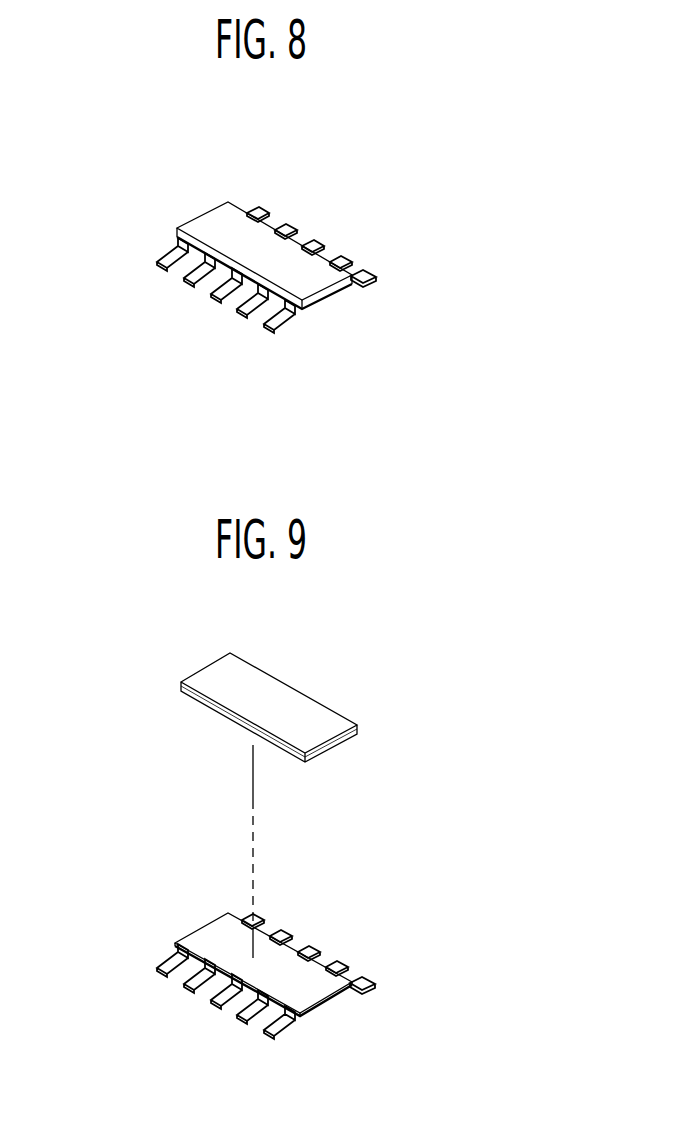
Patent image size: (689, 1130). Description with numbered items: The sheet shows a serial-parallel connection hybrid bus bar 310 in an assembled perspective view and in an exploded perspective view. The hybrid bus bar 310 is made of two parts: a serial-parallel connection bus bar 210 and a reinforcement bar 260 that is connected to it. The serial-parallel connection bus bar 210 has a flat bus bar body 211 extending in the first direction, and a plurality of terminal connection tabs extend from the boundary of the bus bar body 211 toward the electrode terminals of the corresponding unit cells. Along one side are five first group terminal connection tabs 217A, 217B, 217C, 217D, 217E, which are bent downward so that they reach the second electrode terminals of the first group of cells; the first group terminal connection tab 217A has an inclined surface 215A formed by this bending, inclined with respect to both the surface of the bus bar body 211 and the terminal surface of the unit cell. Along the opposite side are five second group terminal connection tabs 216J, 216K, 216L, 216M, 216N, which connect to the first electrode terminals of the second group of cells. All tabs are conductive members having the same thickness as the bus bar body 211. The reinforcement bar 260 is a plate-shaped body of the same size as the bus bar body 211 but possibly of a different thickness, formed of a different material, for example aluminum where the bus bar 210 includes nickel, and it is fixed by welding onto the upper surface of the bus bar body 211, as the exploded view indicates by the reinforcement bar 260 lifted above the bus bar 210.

In FIG. 8, the serial-parallel connection hybrid bus bar 310 is at (548, 146).
In FIG. 9, the serial-parallel connection hybrid bus bar 310 is at (548, 694).
In FIG. 8, the reinforcement bar 260 is at (193, 212).
In FIG. 9, the reinforcement bar 260 is at (195, 663).
In FIG. 8, the serial-parallel connection bus bar 210 is at (344, 300).
In FIG. 9, the serial-parallel connection bus bar 210 is at (195, 919).
In FIG. 9, the bus bar body 211 is at (320, 987).
In FIG. 8, the inclined surface 215A is at (180, 247).
In FIG. 9, the inclined surface 215A is at (175, 952).
In FIG. 8, the second group terminal connection tab 216J is at (258, 207).
In FIG. 9, the second group terminal connection tab 216J is at (254, 914).
In FIG. 8, the second group terminal connection tab 216K is at (284, 224).
In FIG. 9, the second group terminal connection tab 216K is at (281, 930).
In FIG. 8, the second group terminal connection tab 216L is at (313, 240).
In FIG. 9, the second group terminal connection tab 216L is at (309, 946).
In FIG. 8, the second group terminal connection tab 216M is at (341, 256).
In FIG. 9, the second group terminal connection tab 216M is at (337, 961).
In FIG. 8, the second group terminal connection tab 216N is at (375, 275).
In FIG. 9, the second group terminal connection tab 216N is at (375, 982).
In FIG. 8, the first group terminal connection tab 217A is at (160, 268).
In FIG. 9, the first group terminal connection tab 217A is at (162, 973).
In FIG. 8, the first group terminal connection tab 217B is at (192, 281).
In FIG. 9, the first group terminal connection tab 217B is at (192, 987).
In FIG. 8, the first group terminal connection tab 217C is at (221, 296).
In FIG. 9, the first group terminal connection tab 217C is at (221, 1002).
In FIG. 8, the first group terminal connection tab 217D is at (249, 312).
In FIG. 9, the first group terminal connection tab 217D is at (249, 1018).
In FIG. 8, the first group terminal connection tab 217E is at (274, 326).
In FIG. 9, the first group terminal connection tab 217E is at (274, 1032).